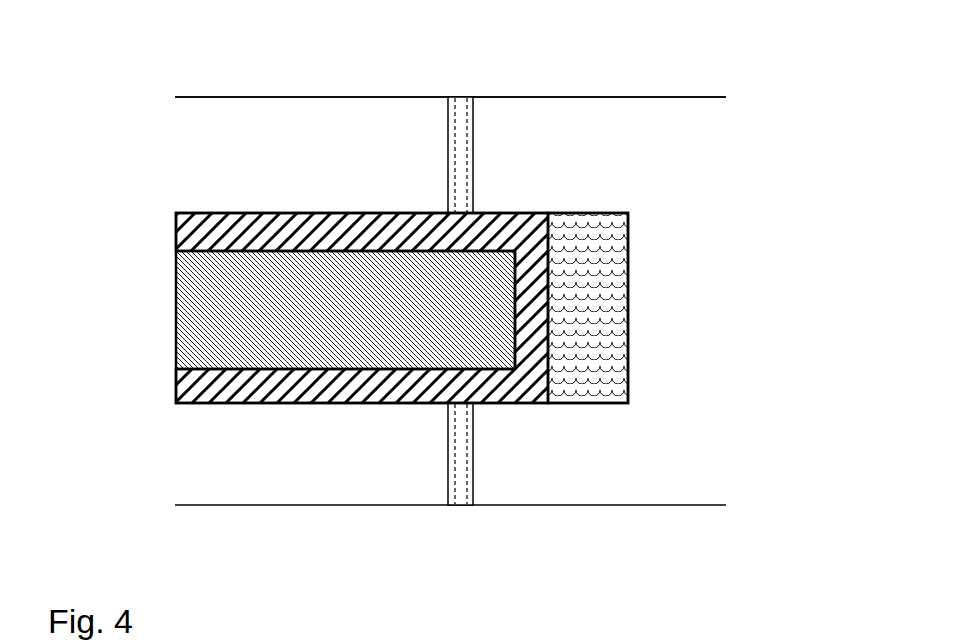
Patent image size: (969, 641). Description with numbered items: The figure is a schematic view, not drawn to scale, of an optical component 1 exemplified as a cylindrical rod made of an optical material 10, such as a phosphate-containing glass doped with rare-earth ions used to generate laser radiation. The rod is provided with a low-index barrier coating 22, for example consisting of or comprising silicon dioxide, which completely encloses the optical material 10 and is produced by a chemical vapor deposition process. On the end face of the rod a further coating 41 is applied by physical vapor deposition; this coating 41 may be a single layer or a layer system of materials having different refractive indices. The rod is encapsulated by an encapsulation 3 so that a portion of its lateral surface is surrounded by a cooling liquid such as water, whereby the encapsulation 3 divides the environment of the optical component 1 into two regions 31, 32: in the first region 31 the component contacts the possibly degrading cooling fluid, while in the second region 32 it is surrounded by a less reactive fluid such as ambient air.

The optical component 1 is at (61, 316).
The encapsulation 3 is at (449, 442).
The optical material 10 is at (175, 285).
The low-index barrier coating 22 is at (523, 212).
The first region 31 is at (343, 115).
The second region 32 is at (523, 122).
The end face coating 41 is at (628, 318).